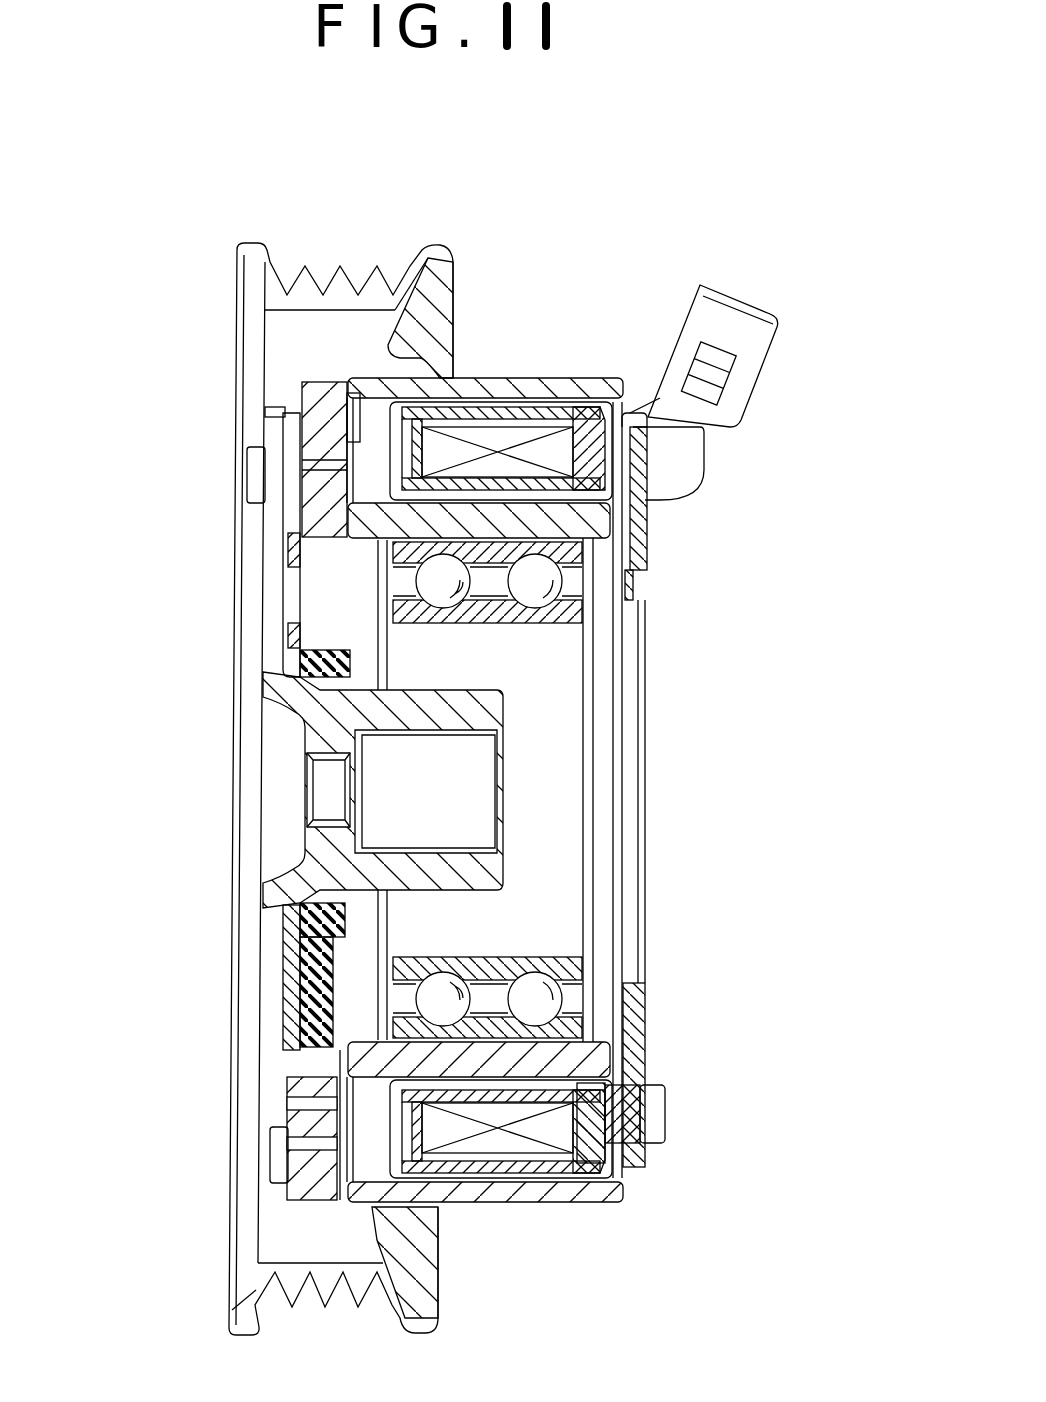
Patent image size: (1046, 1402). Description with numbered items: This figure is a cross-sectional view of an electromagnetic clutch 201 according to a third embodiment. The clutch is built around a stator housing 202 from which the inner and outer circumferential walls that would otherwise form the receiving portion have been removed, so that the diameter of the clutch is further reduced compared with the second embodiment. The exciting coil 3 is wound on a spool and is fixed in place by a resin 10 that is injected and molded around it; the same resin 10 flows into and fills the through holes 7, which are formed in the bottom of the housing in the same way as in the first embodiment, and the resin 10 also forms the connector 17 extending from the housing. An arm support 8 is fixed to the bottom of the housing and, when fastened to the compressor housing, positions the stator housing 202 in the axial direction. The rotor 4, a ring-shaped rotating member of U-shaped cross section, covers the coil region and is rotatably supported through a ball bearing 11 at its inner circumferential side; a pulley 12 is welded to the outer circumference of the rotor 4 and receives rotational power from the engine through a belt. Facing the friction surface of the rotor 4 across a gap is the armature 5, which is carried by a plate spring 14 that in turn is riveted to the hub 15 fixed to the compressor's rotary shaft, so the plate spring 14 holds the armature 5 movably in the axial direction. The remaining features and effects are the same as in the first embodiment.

The electromagnetic clutch 201 is at (557, 240).
The pulley 12 is at (267, 262).
The rotor 4 is at (593, 390).
The resin 10 is at (507, 390).
The exciting coil 3 is at (550, 457).
The arm support 8 is at (637, 553).
The ball bearing 11 is at (567, 603).
The hub 15 is at (273, 890).
The armature 5 is at (300, 393).
The plate spring 14 is at (293, 1002).
The connector 17 is at (750, 337).
The through holes 7 is at (633, 1137).
The stator housing 202 is at (623, 1163).